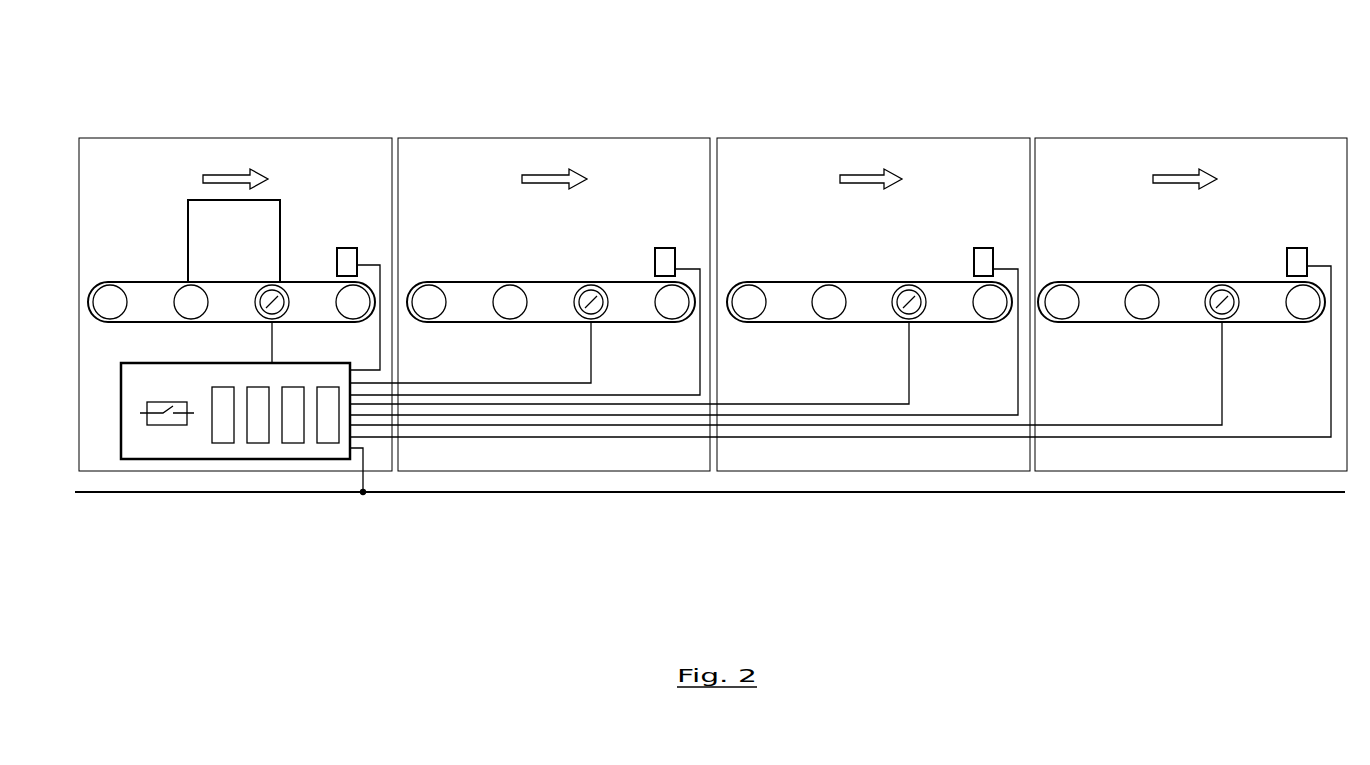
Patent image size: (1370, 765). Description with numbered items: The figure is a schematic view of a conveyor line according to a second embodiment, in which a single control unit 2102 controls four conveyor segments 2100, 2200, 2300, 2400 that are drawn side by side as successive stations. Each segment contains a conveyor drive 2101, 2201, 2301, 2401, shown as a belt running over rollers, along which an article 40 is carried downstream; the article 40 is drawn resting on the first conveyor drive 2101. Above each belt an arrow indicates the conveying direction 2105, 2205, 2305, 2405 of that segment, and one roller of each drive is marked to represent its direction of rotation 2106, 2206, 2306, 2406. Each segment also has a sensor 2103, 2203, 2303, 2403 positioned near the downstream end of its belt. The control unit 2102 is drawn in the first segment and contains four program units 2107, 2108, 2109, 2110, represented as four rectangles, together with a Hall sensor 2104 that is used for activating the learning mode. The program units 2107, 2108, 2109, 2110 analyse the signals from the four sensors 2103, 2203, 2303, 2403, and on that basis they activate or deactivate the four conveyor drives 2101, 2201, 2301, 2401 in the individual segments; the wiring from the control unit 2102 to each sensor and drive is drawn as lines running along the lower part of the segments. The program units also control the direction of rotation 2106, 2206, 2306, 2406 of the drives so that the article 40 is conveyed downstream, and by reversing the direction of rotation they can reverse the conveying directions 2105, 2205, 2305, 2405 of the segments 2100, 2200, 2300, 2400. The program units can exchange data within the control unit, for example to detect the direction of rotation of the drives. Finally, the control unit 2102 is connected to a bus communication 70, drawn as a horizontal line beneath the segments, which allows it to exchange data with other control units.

The conveyor segment 2100 is at (113, 138).
The article 40 is at (188, 222).
The conveying direction 2105 is at (232, 170).
The conveyor drive 2101 is at (300, 290).
The direction of rotation 2106 is at (284, 290).
The sensor 2103 is at (345, 248).
The control unit 2102 is at (210, 460).
The Hall sensor 2104 is at (170, 426).
The program unit 2107 is at (221, 444).
The program unit 2108 is at (259, 444).
The program unit 2109 is at (294, 444).
The program unit 2110 is at (329, 444).
The bus communication 70 is at (517, 493).
The conveyor segment 2200 is at (473, 138).
The conveying direction 2205 is at (548, 170).
The conveyor drive 2201 is at (619, 290).
The direction of rotation 2206 is at (603, 290).
The sensor 2203 is at (665, 248).
The conveyor segment 2300 is at (793, 138).
The conveying direction 2305 is at (866, 170).
The conveyor drive 2301 is at (937, 290).
The direction of rotation 2306 is at (921, 290).
The sensor 2303 is at (983, 248).
The conveyor segment 2400 is at (1107, 138).
The conveying direction 2405 is at (1181, 170).
The conveyor drive 2401 is at (1250, 290).
The direction of rotation 2406 is at (1234, 290).
The sensor 2403 is at (1297, 248).